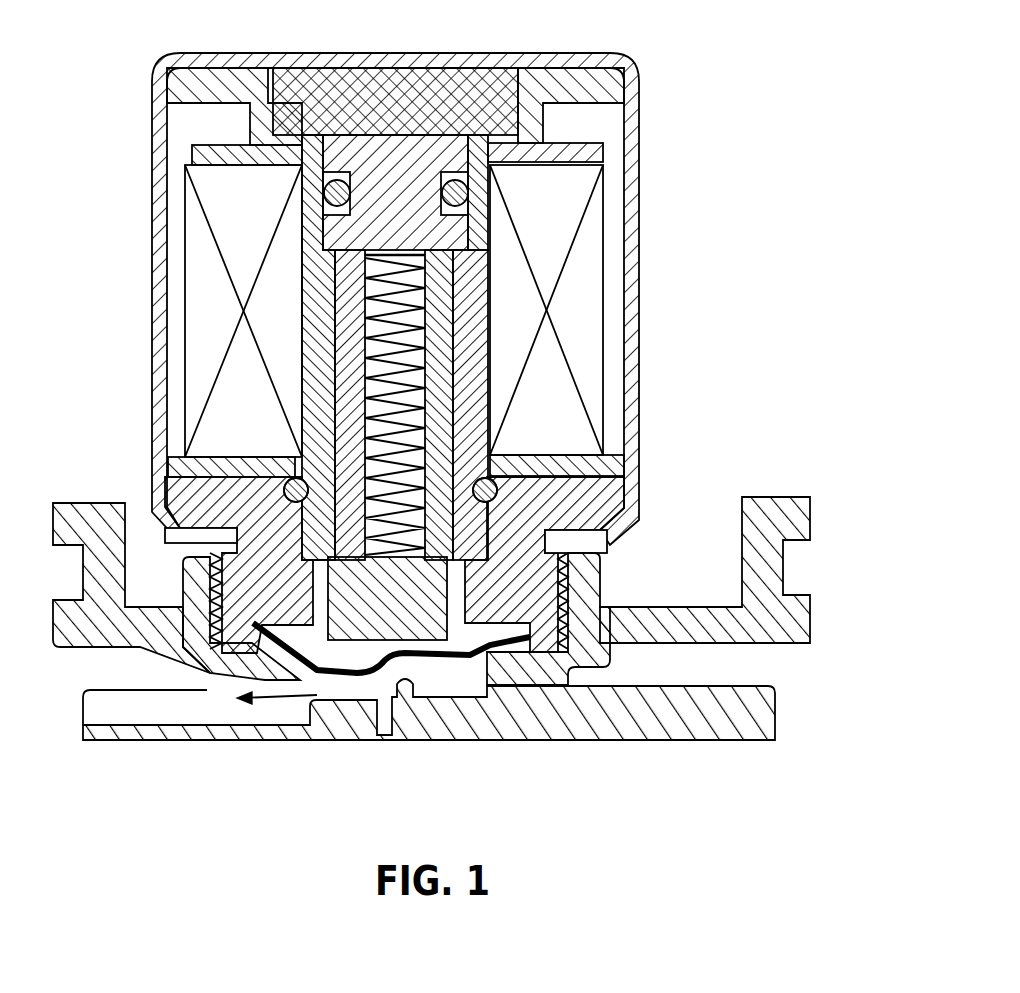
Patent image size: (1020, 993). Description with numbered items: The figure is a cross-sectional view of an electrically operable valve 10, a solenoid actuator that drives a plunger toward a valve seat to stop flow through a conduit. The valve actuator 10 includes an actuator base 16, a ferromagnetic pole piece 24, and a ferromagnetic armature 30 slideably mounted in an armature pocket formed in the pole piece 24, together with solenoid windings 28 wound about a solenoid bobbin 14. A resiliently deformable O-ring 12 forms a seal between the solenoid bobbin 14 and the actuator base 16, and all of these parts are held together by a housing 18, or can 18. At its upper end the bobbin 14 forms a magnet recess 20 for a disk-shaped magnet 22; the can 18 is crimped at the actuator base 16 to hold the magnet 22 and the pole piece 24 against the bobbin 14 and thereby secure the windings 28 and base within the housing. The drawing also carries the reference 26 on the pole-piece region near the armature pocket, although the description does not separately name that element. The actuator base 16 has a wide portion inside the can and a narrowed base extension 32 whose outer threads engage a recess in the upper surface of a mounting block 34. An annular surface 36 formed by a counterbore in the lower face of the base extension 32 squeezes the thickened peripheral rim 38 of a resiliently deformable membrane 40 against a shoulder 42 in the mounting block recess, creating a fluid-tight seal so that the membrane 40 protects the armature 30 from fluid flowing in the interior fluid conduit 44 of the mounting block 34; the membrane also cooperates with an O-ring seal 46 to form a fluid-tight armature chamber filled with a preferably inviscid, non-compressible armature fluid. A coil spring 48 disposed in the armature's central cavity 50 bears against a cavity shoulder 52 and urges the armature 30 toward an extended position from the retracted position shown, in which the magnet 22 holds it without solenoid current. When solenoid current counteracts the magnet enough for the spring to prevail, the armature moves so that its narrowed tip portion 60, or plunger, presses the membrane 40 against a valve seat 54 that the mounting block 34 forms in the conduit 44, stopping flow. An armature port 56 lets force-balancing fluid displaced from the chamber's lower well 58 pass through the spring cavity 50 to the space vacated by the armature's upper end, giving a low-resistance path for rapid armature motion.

The electrically operable valve 10 is at (648, 788).
The O-ring 12 is at (540, 460).
The solenoid bobbin 14 is at (605, 463).
The actuator base 16 is at (603, 505).
The housing 18 is at (640, 396).
The magnet recess 20 is at (292, 53).
The disk-shaped magnet 22 is at (482, 73).
The pole piece 24 is at (520, 133).
The pole piece 26 is at (466, 215).
The solenoid windings 28 is at (600, 215).
The armature 30 is at (350, 317).
The base extension 32 is at (608, 548).
The mounting block 34 is at (696, 606).
The annular surface 36 is at (320, 678).
The thickened peripheral rim 38 is at (207, 673).
The membrane 40 is at (277, 737).
The shoulder 42 is at (186, 625).
The fluid conduit 44 is at (385, 735).
The O-ring seal 46 is at (324, 200).
The coil spring 48 is at (415, 314).
The central cavity 50 is at (415, 267).
The cavity shoulder 52 is at (492, 478).
The valve seat 54 is at (425, 695).
The armature port 56 is at (430, 580).
The lower well 58 is at (463, 640).
The narrowed tip portion 60 is at (445, 683).